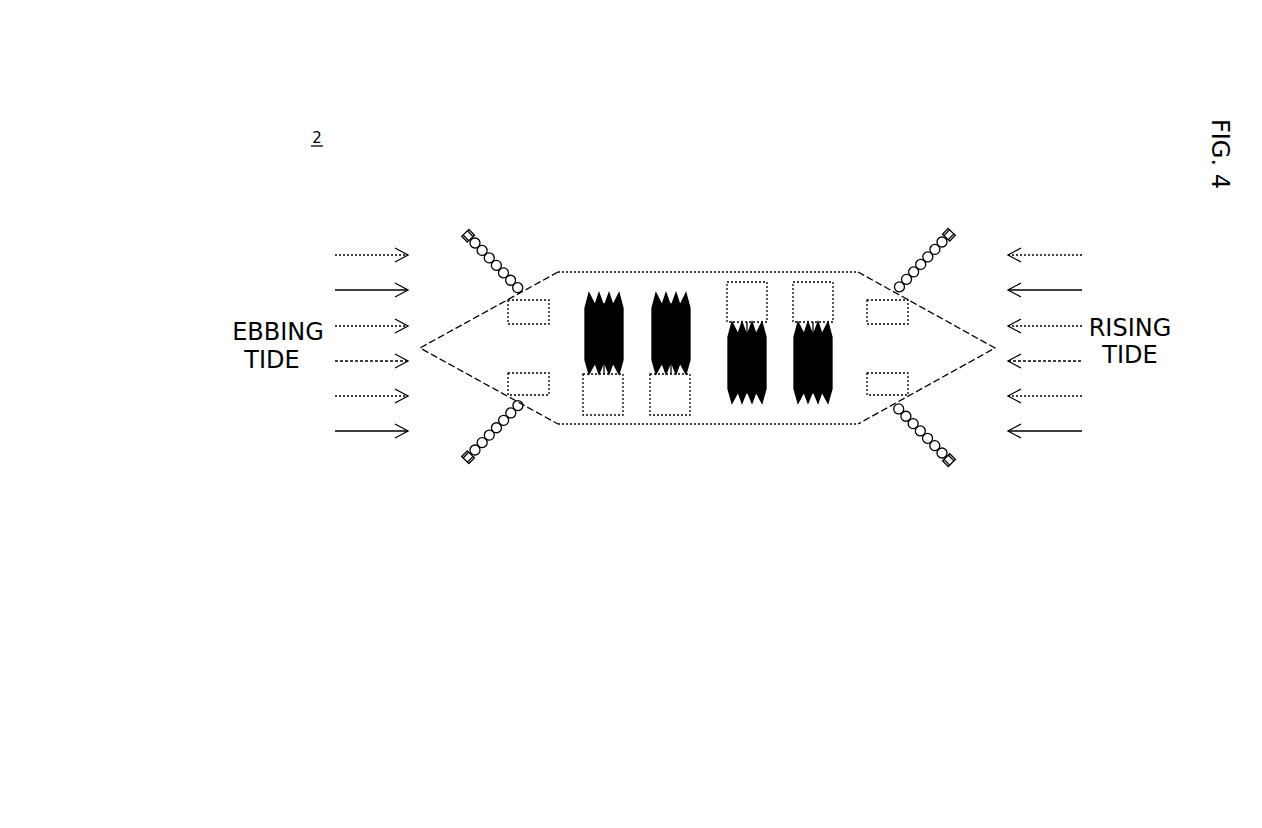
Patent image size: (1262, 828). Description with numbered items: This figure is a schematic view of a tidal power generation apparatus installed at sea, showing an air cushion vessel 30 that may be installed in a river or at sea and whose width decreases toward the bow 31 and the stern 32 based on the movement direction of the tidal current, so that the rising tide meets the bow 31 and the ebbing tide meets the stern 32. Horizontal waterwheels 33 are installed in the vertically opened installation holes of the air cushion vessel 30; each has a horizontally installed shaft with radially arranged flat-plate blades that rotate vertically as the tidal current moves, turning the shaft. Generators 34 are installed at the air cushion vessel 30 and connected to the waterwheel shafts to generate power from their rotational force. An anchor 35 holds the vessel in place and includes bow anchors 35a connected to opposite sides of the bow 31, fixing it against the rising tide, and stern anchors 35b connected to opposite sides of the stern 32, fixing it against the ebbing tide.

The air cushion vessel 30 is at (707, 287).
The bow 31 is at (958, 346).
The stern 32 is at (448, 352).
The horizontal waterwheel 33 is at (616, 283).
The generator 34 is at (605, 403).
The anchor 35 is at (794, 404).
The bow anchor 35a is at (912, 268).
The stern anchor 35b is at (512, 273).